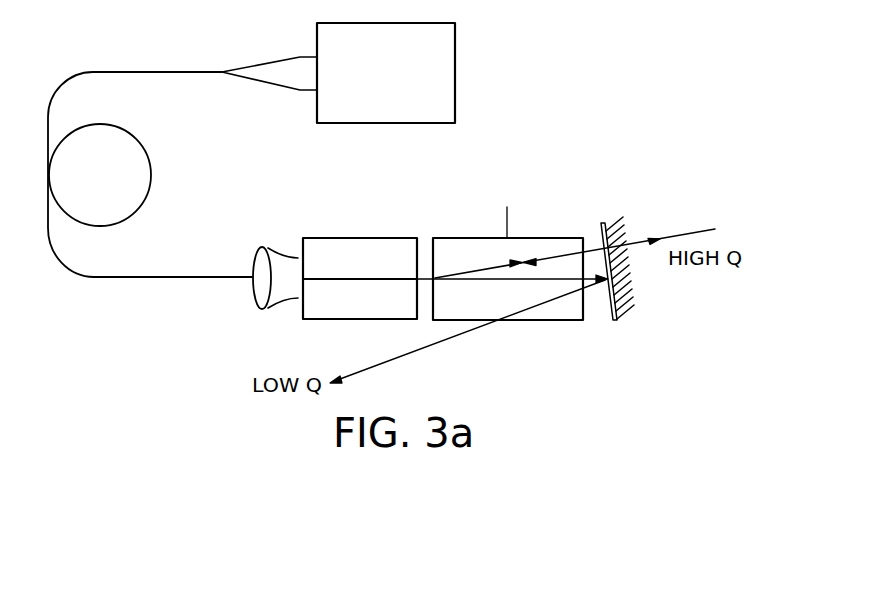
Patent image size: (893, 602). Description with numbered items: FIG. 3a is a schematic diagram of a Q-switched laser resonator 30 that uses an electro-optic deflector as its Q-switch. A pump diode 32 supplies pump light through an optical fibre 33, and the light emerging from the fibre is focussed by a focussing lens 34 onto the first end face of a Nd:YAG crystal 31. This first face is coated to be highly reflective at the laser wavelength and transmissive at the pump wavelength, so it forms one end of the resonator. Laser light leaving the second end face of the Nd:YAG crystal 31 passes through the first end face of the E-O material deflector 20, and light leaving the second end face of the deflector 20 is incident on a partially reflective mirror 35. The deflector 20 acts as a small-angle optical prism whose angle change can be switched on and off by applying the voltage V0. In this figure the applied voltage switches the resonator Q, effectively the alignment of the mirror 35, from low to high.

The Q-switched laser resonator 30 is at (568, 127).
The optical fibre 33 is at (111, 72).
The pump diode 32 is at (398, 56).
The focussing lens 34 is at (262, 247).
The Nd:YAG crystal 31 is at (370, 270).
The E-O material deflector 20 is at (475, 269).
The partially reflective mirror 35 is at (617, 322).